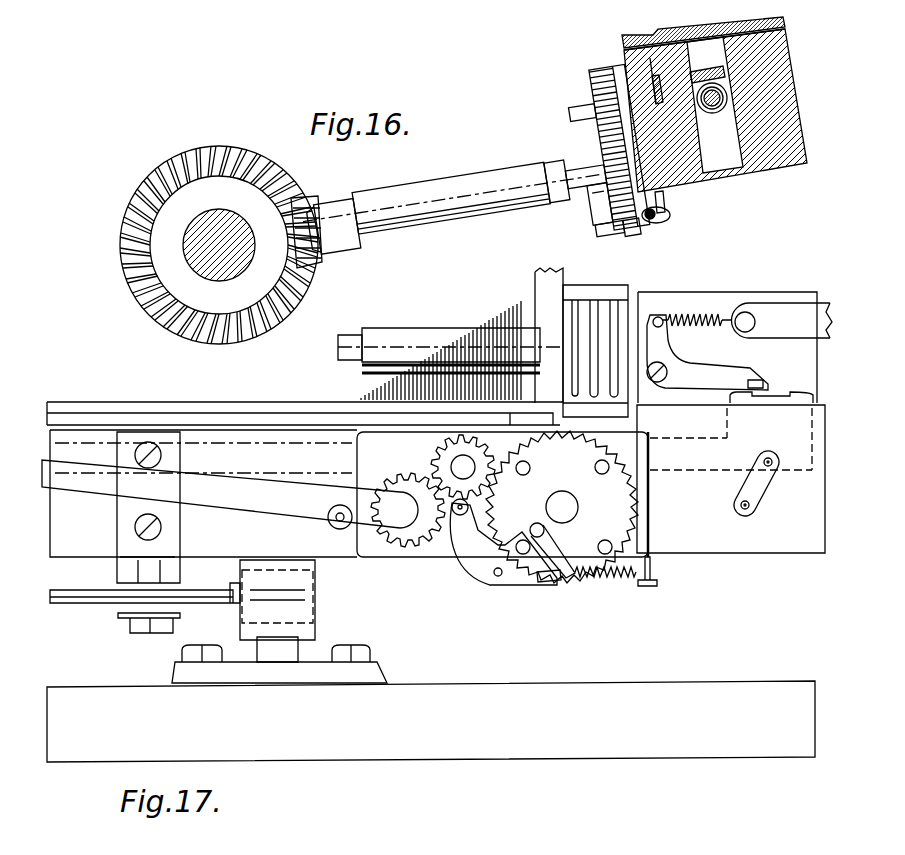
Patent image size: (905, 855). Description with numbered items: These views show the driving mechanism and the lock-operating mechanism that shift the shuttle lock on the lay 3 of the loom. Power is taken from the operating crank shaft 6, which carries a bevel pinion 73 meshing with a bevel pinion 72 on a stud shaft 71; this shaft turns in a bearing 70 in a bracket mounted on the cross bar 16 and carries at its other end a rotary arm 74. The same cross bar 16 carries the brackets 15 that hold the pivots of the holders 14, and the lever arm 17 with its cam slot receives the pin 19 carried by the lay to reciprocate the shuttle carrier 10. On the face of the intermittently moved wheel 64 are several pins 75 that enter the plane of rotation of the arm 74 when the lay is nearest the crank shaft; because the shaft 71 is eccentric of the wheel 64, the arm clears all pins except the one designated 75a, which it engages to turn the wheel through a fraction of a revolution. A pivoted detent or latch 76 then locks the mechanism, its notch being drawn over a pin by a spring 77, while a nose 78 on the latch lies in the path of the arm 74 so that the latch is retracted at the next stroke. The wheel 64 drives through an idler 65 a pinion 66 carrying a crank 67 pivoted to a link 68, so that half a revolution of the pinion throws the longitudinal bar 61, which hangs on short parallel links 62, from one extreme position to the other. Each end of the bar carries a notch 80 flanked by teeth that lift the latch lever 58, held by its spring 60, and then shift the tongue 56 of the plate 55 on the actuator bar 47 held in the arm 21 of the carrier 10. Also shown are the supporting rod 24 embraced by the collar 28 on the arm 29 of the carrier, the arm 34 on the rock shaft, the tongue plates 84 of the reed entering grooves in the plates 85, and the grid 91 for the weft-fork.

In FIG. 16, the lay 3 is at (784, 164).
In FIG. 17, the lay 3 is at (786, 546).
In FIG. 16, the operating crank shaft 6 is at (228, 272).
In FIG. 17, the shuttle carrier 10 is at (762, 300).
In FIG. 17, the holder 14 is at (275, 598).
In FIG. 17, the bracket 15 is at (246, 644).
In FIG. 17, the cross bar 16 is at (431, 721).
In FIG. 17, the arm 17 is at (78, 602).
In FIG. 17, the pin or roll 19 is at (136, 626).
In FIG. 17, the arm 21 is at (390, 330).
In FIG. 16, the supporting rod 24 is at (789, 66).
In FIG. 16, the collar 28 is at (714, 114).
In FIG. 16, the arm 29 is at (708, 66).
In FIG. 17, the arm 34 is at (806, 333).
In FIG. 17, the actuator bar 47 is at (340, 350).
In FIG. 17, the strip or plate 55 is at (718, 340).
In FIG. 17, the tongue 56 is at (760, 380).
In FIG. 17, the latch lever 58 is at (665, 385).
In FIG. 17, the spring 60 is at (696, 312).
In FIG. 16, the longitudinal bar 61 is at (652, 87).
In FIG. 17, the longitudinal bar 61 is at (693, 472).
In FIG. 17, the parallel links 62 is at (756, 494).
In FIG. 16, the intermittently moved wheel 64 is at (602, 84).
In FIG. 17, the intermittently moved wheel 64 is at (649, 538).
In FIG. 17, the idler 65 is at (432, 458).
In FIG. 17, the pinion 66 is at (418, 548).
In FIG. 17, the crank 67 is at (396, 528).
In FIG. 17, the link 68 is at (245, 500).
In FIG. 16, the bearing 70 is at (460, 222).
In FIG. 16, the stud shaft 71 is at (497, 168).
In FIG. 16, the bevel pinion 72 is at (322, 206).
In FIG. 16, the bevel pinion 73 is at (215, 150).
In FIG. 16, the rotary arm 74 is at (590, 214).
In FIG. 17, the rotary arm 74 is at (553, 552).
In FIG. 16, the pins 75 is at (580, 119).
In FIG. 17, the pins 75 is at (521, 476).
In FIG. 17, the pin 75a is at (522, 556).
In FIG. 16, the pivoted detent or latch 76 is at (626, 250).
In FIG. 17, the pivoted detent or latch 76 is at (472, 566).
In FIG. 16, the spring 77 is at (660, 222).
In FIG. 17, the spring 77 is at (626, 579).
In FIG. 16, the nose 78 is at (600, 246).
In FIG. 17, the nose 78 is at (552, 584).
In FIG. 17, the notch 80 is at (772, 398).
In FIG. 17, the tongue plates 84 is at (522, 420).
In FIG. 17, the plates 85 is at (597, 466).
In FIG. 17, the grid 91 is at (572, 294).